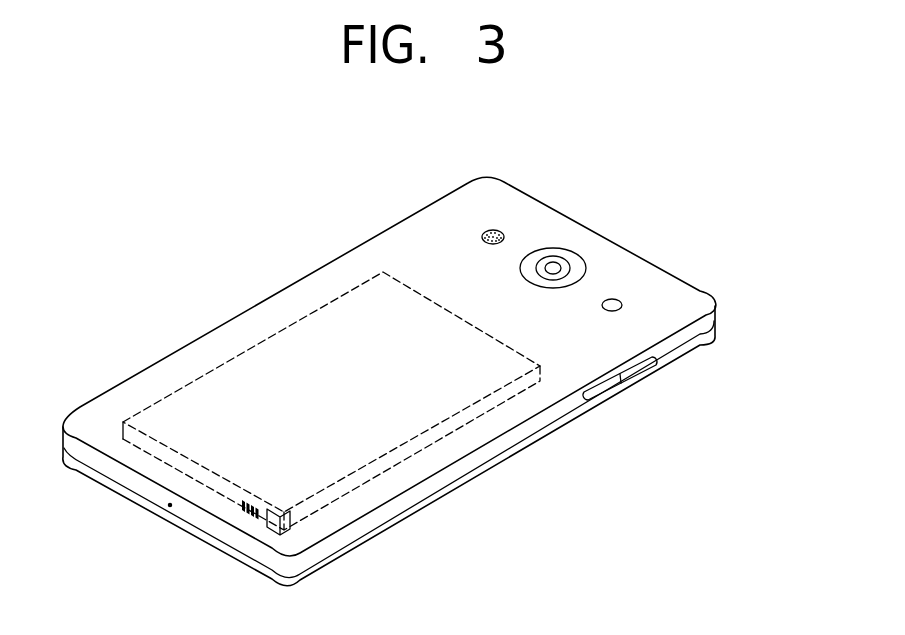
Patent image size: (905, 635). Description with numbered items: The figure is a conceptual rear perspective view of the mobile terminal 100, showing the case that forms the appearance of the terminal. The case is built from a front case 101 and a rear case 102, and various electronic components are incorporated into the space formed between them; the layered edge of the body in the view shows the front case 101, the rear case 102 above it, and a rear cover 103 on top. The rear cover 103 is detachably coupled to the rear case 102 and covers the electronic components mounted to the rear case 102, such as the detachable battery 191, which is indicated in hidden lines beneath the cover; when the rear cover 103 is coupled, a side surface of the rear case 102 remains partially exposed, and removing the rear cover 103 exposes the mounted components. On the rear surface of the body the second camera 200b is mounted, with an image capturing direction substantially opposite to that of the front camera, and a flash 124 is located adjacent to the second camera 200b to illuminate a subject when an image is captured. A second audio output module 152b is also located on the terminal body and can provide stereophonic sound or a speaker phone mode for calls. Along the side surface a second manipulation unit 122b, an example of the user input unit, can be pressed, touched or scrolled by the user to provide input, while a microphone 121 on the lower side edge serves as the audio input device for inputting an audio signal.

The mobile terminal 100 is at (250, 283).
The front case 101 is at (715, 342).
The rear case 102 is at (713, 322).
The rear cover 103 is at (711, 296).
The microphone 121 is at (168, 507).
The second manipulation unit 122b is at (606, 388).
The flash 124 is at (614, 302).
The second audio output module 152b is at (497, 233).
The battery 191 is at (238, 362).
The second camera 200b is at (556, 266).